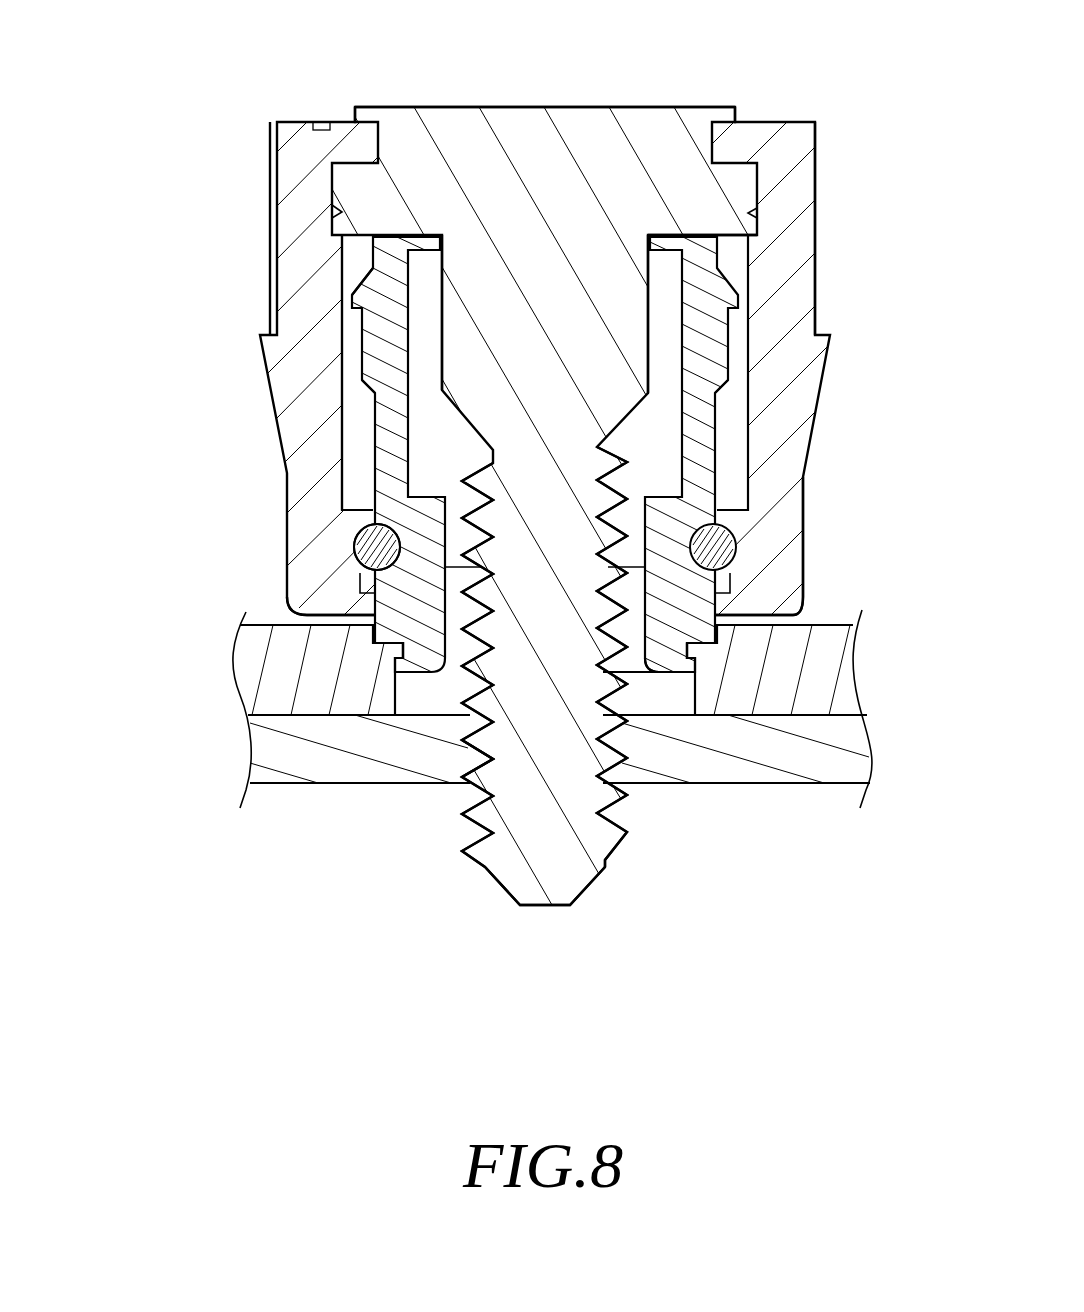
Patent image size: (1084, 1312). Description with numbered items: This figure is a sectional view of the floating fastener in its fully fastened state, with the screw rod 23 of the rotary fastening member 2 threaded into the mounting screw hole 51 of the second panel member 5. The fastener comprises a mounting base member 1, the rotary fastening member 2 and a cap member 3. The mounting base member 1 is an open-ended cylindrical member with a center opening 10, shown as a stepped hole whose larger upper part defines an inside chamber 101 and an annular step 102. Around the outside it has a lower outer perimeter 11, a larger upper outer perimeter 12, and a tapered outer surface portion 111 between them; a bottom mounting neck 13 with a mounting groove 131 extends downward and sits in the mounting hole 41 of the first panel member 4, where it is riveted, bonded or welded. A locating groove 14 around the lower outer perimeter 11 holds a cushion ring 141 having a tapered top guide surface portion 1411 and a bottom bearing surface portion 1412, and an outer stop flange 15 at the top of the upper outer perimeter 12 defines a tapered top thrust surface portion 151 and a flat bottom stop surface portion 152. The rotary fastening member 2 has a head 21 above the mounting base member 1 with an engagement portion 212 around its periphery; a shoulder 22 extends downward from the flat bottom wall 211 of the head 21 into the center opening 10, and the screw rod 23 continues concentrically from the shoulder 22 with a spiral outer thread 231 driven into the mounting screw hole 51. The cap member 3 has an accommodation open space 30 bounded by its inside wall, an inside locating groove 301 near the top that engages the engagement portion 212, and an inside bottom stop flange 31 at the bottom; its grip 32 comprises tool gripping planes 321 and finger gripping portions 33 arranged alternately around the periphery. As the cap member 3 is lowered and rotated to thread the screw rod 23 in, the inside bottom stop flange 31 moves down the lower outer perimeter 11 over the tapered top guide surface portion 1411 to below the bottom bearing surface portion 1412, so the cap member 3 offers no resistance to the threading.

The mounting base member 1 is at (878, 590).
The center opening 10 is at (635, 680).
The inside chamber 101 is at (665, 430).
The annular step 102 is at (663, 487).
The lower outer perimeter 11 is at (693, 590).
The tapered outer surface portion 111 is at (730, 393).
The upper outer perimeter 12 is at (713, 332).
The bottom mounting neck 13 is at (687, 673).
The mounting groove 131 is at (693, 650).
The locating groove 14 is at (383, 520).
The cushion ring 141 is at (398, 537).
The tapered top guide surface portion 1411 is at (358, 537).
The bottom bearing surface portion 1412 is at (360, 573).
The outer stop flange 15 is at (160, 277).
The tapered top thrust surface portion 151 is at (365, 265).
The flat bottom stop surface portion 152 is at (352, 300).
The rotary fastening member 2 is at (603, 84).
The head 21 is at (551, 118).
The flat bottom wall 211 is at (731, 238).
The engagement portion 212 is at (745, 193).
The shoulder 22 is at (617, 322).
The screw rod 23 is at (649, 858).
The spiral outer thread 231 is at (603, 840).
The cap member 3 is at (235, 140).
The accommodation open space 30 is at (340, 423).
The inside locating groove 301 is at (338, 190).
The inside bottom stop flange 31 is at (347, 598).
The grip 32 is at (890, 98).
The tool gripping planes 321 is at (815, 138).
The finger gripping portions 33 is at (272, 185).
The first panel member 4 is at (243, 660).
The mounting hole 41 is at (400, 690).
The second panel member 5 is at (276, 760).
The mounting screw hole 51 is at (473, 747).